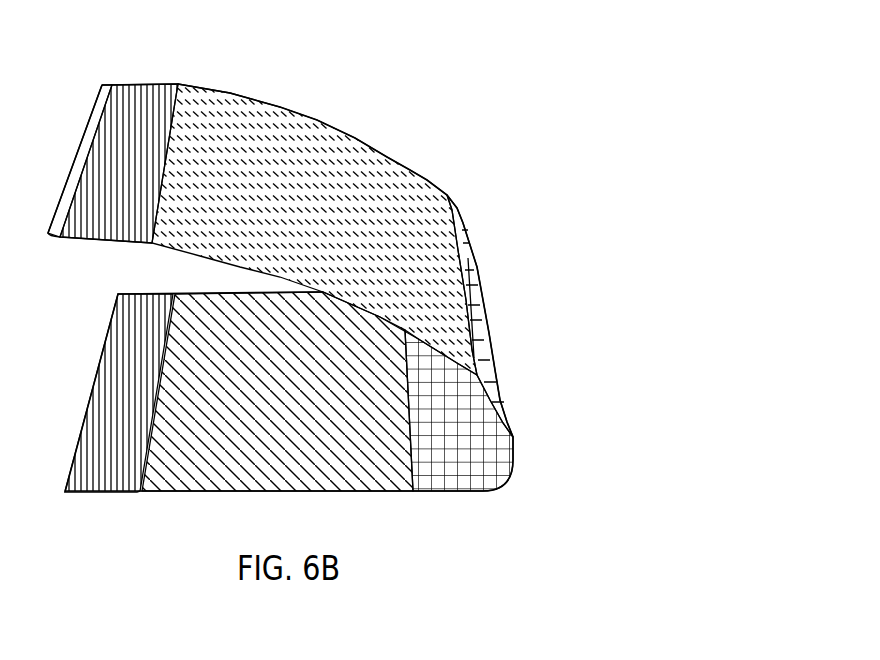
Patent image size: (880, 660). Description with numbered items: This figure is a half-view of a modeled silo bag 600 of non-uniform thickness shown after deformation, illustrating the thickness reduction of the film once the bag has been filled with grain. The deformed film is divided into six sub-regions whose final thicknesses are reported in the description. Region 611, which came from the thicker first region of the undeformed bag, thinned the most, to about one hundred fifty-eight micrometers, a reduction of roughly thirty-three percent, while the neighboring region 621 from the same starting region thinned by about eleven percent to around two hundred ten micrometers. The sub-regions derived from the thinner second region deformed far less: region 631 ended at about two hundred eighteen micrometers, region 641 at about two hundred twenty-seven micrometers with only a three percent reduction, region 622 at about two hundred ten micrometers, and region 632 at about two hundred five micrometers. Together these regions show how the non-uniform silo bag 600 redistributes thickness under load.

The keycap assembly 600 is at (410, 103).
The region 611 is at (98, 95).
The region 621 is at (147, 92).
The region 622 is at (122, 320).
The region 631 is at (312, 125).
The region 632 is at (205, 318).
The region 641 is at (463, 217).